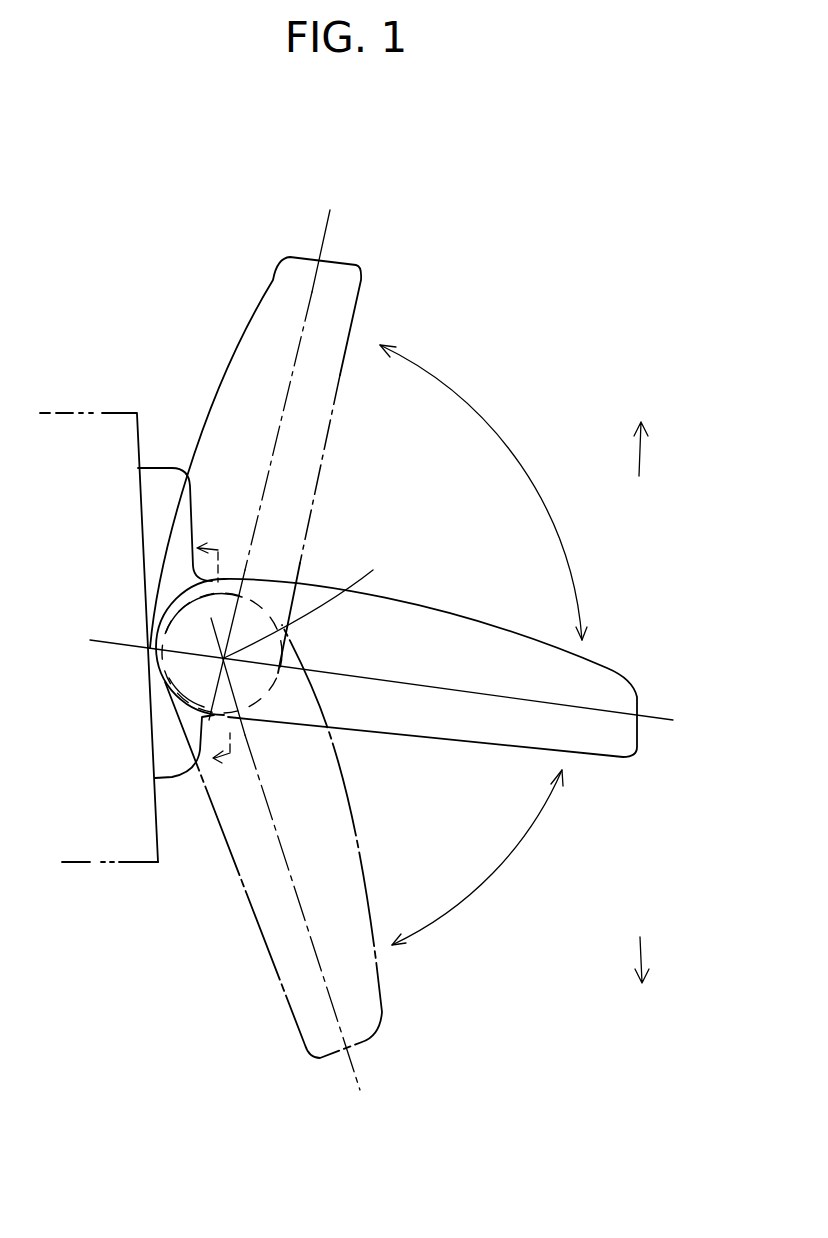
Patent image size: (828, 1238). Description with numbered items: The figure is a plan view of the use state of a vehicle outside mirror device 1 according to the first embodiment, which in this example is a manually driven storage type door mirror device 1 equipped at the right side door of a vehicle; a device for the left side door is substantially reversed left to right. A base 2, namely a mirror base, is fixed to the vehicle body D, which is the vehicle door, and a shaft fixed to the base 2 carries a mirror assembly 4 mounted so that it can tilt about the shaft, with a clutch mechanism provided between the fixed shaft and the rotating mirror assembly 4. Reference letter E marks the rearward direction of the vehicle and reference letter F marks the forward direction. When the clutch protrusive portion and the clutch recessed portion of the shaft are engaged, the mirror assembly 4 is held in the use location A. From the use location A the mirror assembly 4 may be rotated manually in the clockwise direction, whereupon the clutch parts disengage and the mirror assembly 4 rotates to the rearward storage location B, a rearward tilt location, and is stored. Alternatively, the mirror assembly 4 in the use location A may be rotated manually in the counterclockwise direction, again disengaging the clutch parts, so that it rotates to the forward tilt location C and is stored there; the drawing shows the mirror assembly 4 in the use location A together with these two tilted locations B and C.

The vehicle outside mirror device 1 is at (522, 357).
The base 2 is at (160, 467).
The mirror assembly 4 is at (287, 258).
The use location A is at (658, 719).
The rearward storage location B is at (355, 1067).
The forward tilt location C is at (327, 230).
The vehicle body D is at (115, 410).
The rearward direction E is at (643, 979).
The forward direction F is at (639, 427).